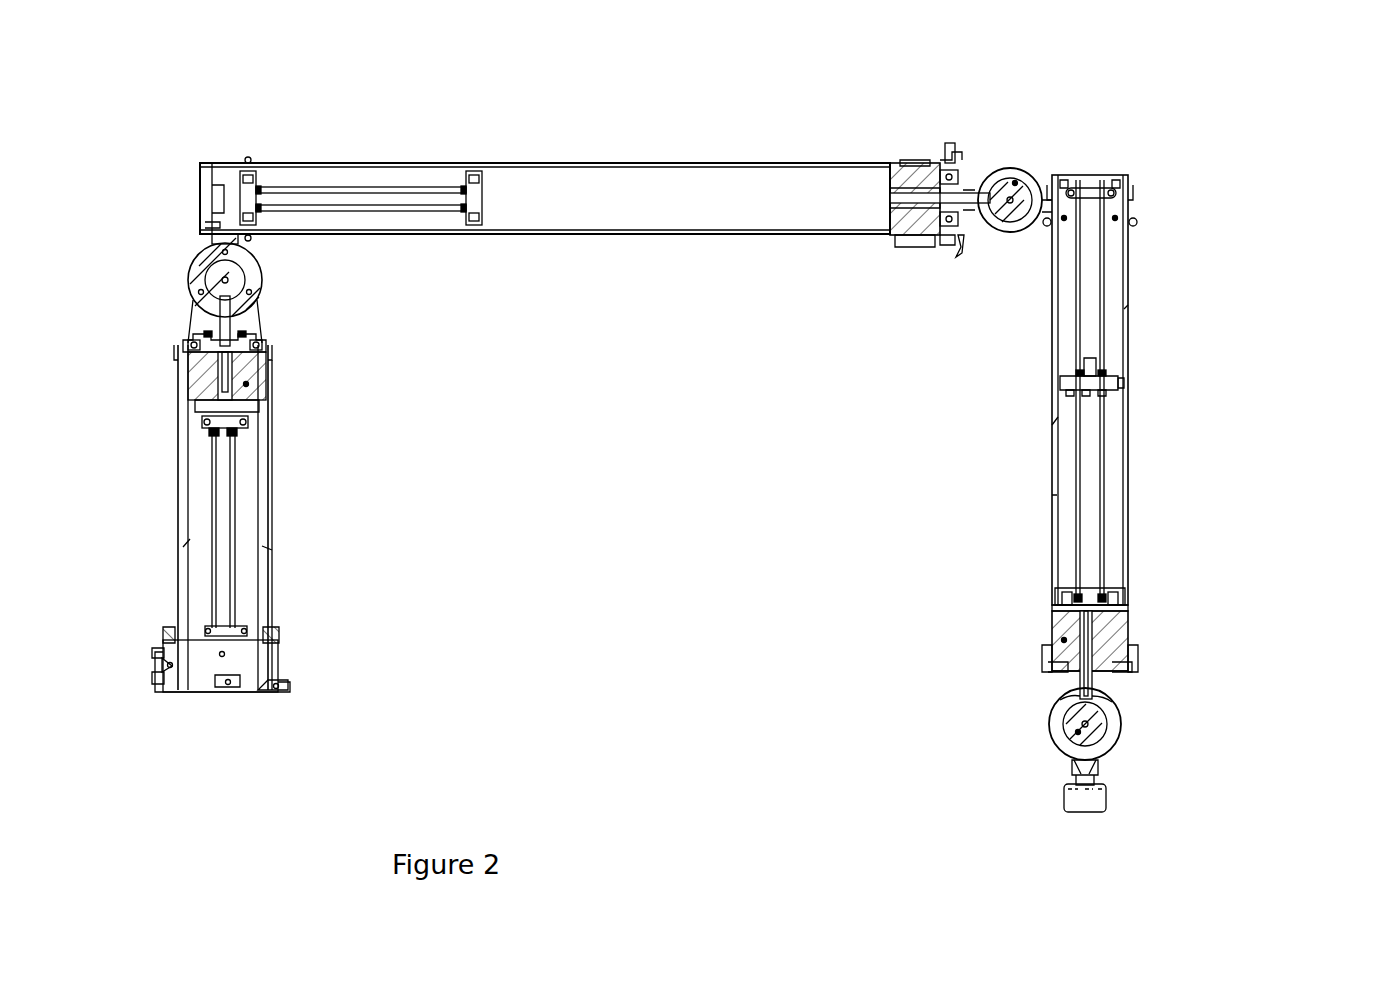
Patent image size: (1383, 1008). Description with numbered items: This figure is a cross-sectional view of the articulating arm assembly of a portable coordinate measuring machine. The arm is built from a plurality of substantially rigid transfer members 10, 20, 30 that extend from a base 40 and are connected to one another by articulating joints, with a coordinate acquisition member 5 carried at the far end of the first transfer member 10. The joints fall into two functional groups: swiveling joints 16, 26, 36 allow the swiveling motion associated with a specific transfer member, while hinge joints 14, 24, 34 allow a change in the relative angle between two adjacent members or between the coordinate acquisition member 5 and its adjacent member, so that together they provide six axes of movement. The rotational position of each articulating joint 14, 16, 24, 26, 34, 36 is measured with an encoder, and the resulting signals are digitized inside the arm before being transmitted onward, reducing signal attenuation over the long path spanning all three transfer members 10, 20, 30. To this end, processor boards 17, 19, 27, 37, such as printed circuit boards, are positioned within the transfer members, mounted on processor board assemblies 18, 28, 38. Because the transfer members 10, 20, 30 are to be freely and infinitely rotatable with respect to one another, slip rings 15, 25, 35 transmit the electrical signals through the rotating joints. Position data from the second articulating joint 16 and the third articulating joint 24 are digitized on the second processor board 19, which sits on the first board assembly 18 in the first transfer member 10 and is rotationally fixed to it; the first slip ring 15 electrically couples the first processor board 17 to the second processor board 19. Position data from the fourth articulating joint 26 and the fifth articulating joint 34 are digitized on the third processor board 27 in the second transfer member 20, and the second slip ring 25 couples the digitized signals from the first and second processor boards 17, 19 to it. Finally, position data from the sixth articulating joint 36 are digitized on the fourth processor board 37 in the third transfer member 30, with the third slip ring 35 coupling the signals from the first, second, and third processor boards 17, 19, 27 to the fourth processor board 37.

The coordinate acquisition member 5 is at (1105, 797).
The transfer member 10 is at (1130, 463).
The articulating joint 14 is at (1090, 724).
The slip ring 15 is at (1065, 380).
The articulating joint 16 is at (1130, 640).
The processor board 17 is at (1092, 495).
The processor board assembly 18 is at (1115, 385).
The processor board 19 is at (1090, 308).
The transfer member 20 is at (616, 160).
The articulating joint 24 is at (1020, 165).
The slip ring 25 is at (885, 160).
The articulating joint 26 is at (940, 255).
The processor board 27 is at (389, 190).
The processor board assembly 28 is at (374, 183).
The transfer member 30 is at (178, 494).
The articulating joint 34 is at (218, 287).
The slip ring 35 is at (272, 380).
The articulating joint 36 is at (208, 363).
The processor board 37 is at (213, 487).
The processor board assembly 38 is at (213, 418).
The base 40 is at (150, 674).